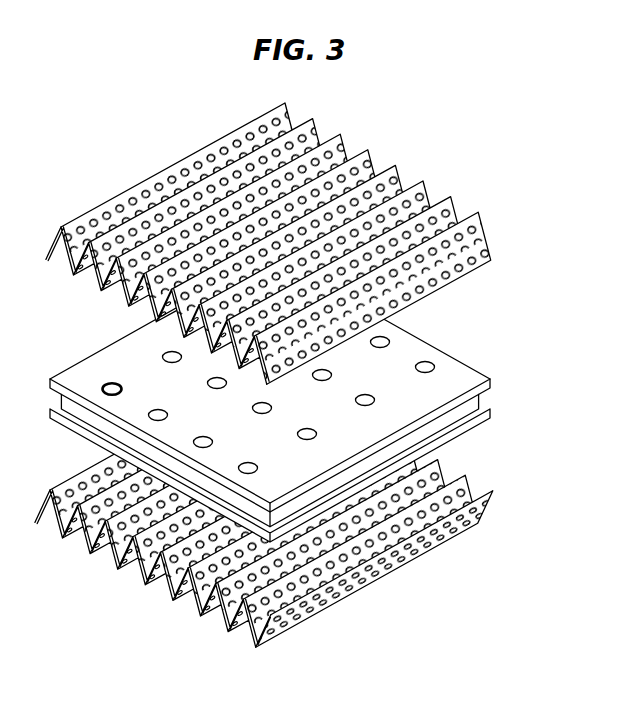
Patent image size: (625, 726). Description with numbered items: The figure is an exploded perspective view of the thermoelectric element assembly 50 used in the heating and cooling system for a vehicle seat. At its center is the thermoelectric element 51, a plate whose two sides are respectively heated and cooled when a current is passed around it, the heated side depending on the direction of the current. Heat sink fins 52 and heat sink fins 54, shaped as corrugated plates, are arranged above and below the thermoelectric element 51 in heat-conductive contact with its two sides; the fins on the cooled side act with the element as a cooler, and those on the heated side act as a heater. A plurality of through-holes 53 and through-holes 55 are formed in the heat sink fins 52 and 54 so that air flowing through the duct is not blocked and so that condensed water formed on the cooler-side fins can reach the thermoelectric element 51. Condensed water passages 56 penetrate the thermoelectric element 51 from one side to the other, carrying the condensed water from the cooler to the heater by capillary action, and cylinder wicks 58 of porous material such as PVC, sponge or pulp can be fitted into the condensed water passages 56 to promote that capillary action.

The thermoelectric element assembly 50 is at (418, 674).
The thermoelectric element 51 is at (481, 355).
The heat sink fins 52 is at (393, 168).
The through-holes 53 is at (452, 246).
The heat sink fins 54 is at (364, 588).
The through-holes 55 is at (323, 612).
The condensed water passages 56 is at (433, 370).
The cylinder wicks 58 is at (110, 383).